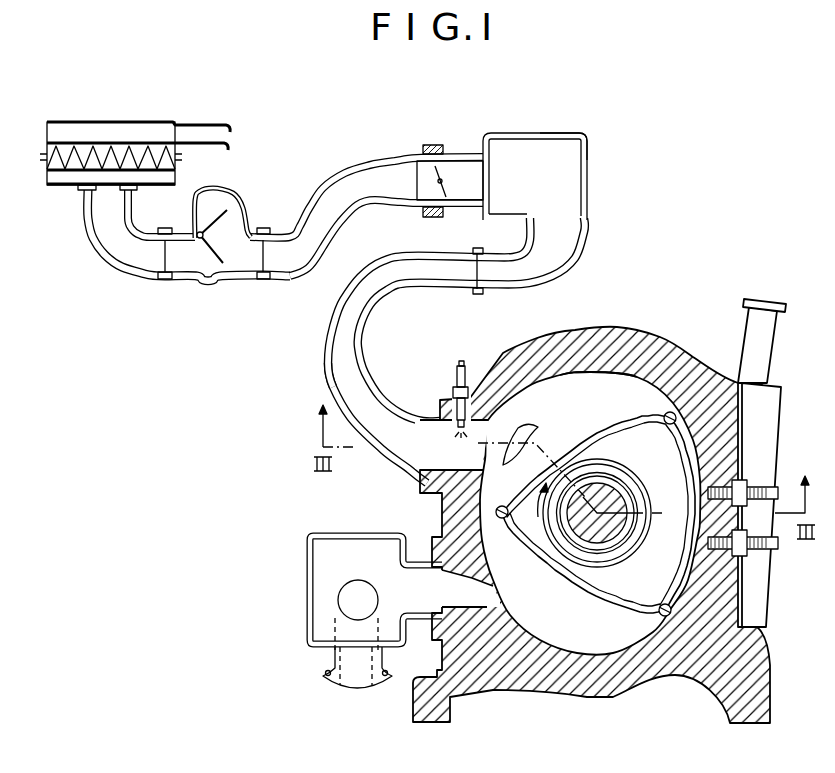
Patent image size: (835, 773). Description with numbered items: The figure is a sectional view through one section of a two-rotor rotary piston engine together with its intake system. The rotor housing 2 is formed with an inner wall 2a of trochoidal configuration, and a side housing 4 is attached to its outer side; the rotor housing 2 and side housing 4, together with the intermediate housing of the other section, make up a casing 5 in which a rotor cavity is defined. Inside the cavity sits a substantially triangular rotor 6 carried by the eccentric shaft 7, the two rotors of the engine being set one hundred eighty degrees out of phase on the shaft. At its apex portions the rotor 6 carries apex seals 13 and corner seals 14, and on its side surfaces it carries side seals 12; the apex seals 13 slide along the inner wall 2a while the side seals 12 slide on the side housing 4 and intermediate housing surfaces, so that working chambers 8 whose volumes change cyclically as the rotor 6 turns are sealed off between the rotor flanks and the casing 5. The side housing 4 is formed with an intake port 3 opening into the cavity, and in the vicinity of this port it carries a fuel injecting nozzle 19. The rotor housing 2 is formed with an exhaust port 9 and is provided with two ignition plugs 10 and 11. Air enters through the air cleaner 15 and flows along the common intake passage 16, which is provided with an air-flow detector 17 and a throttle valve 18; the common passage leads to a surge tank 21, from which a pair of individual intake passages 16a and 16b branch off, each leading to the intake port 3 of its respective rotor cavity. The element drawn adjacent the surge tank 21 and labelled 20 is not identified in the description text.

The rotor housing 2 is at (591, 503).
The inner wall 2a is at (594, 372).
The intake port 3 is at (530, 423).
The side housing 4 is at (498, 364).
The casing 5 is at (553, 335).
The rotor 6 is at (570, 519).
The eccentric shaft 7 is at (600, 560).
The working chamber 8 is at (557, 411).
The exhaust port 9 is at (485, 607).
The ignition plug 10 is at (760, 550).
The ignition plug 11 is at (760, 488).
The side seal 12 is at (640, 407).
The apex seal 13 is at (677, 411).
The corner seal 14 is at (678, 410).
The air cleaner 15 is at (141, 120).
The common intake passage 16 is at (249, 268).
The individual intake passage 16a is at (343, 364).
The individual intake passage 16b is at (284, 386).
The air-flow detector 17 is at (220, 198).
The throttle valve 18 is at (447, 162).
The fuel injecting nozzle 19 is at (453, 392).
The surge tank 20 is at (559, 176).
The surge tank 21 is at (588, 140).